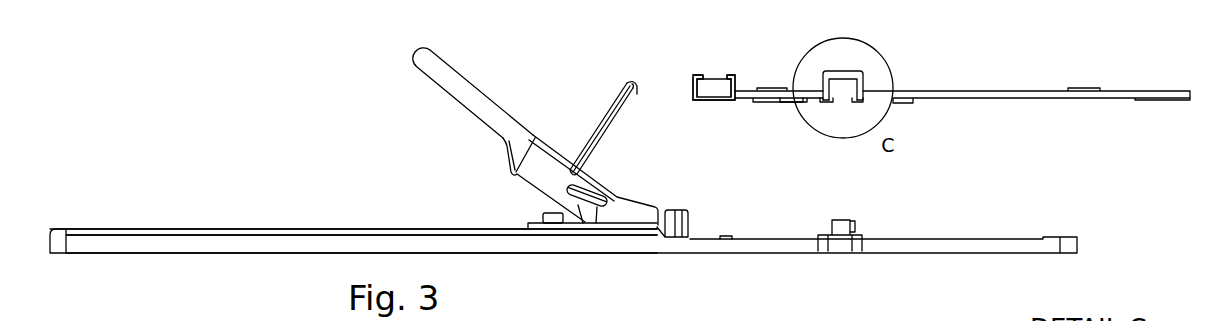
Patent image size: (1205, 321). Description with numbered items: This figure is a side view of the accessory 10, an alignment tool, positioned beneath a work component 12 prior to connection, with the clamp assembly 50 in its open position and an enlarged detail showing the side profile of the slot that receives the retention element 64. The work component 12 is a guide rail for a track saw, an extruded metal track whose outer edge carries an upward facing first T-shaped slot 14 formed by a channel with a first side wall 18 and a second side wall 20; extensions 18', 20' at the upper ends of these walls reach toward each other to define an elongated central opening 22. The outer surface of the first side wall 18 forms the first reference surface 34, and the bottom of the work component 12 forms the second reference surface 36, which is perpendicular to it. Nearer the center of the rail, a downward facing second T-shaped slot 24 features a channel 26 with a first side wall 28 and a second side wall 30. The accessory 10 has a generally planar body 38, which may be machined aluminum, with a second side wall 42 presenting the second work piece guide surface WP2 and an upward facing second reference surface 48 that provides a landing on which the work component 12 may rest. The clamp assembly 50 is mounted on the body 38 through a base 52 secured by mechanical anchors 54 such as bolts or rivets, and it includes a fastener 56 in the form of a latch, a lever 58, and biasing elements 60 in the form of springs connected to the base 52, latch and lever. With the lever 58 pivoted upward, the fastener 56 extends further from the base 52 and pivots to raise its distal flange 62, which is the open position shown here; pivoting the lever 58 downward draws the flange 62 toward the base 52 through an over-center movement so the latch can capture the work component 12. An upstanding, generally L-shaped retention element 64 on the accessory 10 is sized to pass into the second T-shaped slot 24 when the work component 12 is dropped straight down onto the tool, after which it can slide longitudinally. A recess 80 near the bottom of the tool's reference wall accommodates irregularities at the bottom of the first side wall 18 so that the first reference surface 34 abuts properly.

The accessory 10 is at (359, 115).
The work component 12 is at (1028, 117).
The first T-shaped slot 14 is at (733, 117).
The first side wall 18 is at (691, 104).
The extension 18' is at (674, 46).
The second side wall 20 is at (755, 81).
The extension 20' is at (746, 46).
The elongated central opening 22 is at (727, 77).
The second T-shaped slot 24 is at (827, 115).
The channel 26 is at (845, 78).
The first side wall 28 is at (825, 85).
The second side wall 30 is at (867, 83).
The first reference surface 34 is at (695, 82).
The second reference surface 36 is at (713, 102).
The body 38 is at (193, 229).
The second side wall 42 is at (470, 245).
The second reference surface 48 is at (715, 240).
The clamp assembly 50 is at (628, 188).
The base 52 is at (622, 222).
The mechanical anchors 54 is at (552, 225).
The fastener 56 is at (595, 130).
The lever 58 is at (455, 82).
The biasing elements 60 is at (585, 202).
The flange 62 is at (627, 83).
The retention element 64 is at (843, 220).
The recess 80 is at (690, 232).
The second work piece guide surface WP2 is at (244, 243).